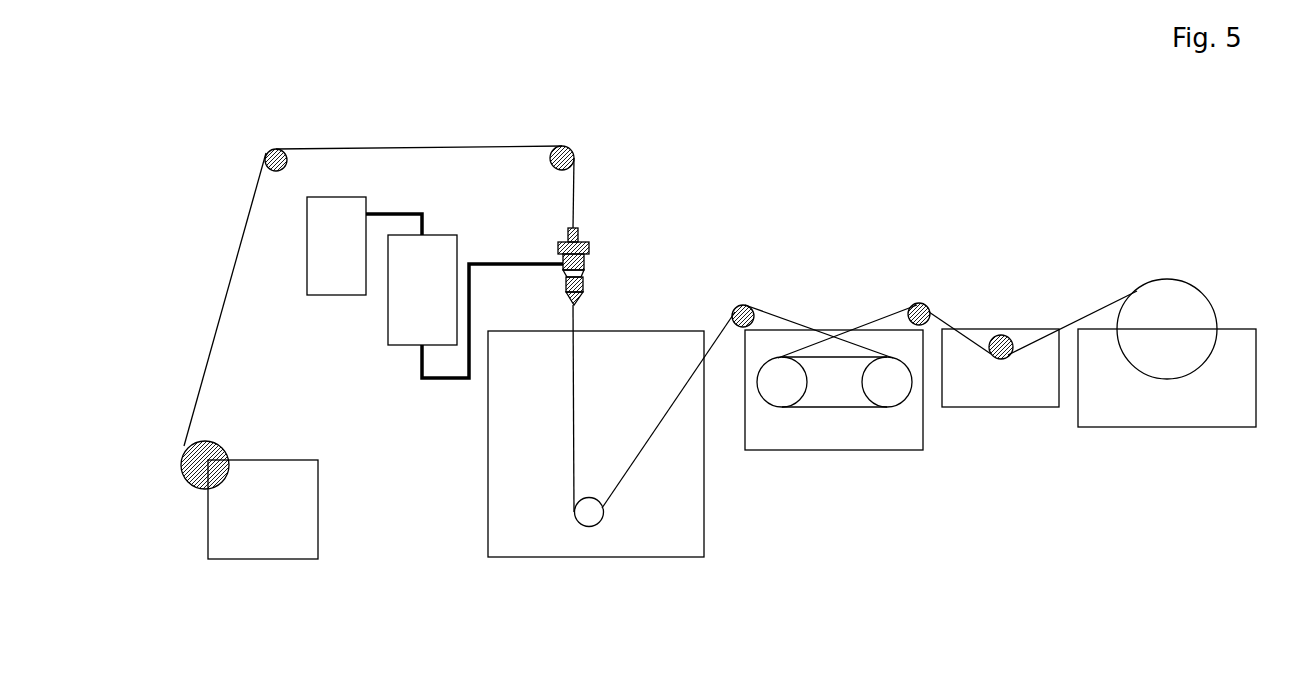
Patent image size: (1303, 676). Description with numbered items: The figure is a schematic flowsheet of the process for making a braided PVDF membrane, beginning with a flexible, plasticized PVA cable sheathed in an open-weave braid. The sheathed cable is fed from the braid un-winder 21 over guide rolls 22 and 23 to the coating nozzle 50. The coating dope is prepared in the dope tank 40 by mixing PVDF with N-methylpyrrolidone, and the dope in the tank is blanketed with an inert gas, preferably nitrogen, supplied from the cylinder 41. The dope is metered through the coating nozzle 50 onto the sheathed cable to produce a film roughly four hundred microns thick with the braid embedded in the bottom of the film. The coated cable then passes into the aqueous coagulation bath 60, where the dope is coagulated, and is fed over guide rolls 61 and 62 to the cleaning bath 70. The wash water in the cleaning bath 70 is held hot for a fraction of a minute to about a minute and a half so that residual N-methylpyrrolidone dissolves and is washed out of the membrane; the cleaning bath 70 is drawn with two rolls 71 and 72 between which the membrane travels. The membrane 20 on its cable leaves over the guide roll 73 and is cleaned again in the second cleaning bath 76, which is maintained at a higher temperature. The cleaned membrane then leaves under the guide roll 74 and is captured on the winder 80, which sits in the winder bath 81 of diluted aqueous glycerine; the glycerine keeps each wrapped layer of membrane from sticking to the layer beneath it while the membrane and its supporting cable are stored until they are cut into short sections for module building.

The membrane 20 is at (886, 315).
The braid un-winder 21 is at (318, 507).
The guide roll 22 is at (271, 148).
The guide roll 23 is at (571, 146).
The dope tank 40 is at (458, 248).
The cylinder 41 is at (333, 296).
The coating nozzle 50 is at (590, 290).
The coagulation bath 60 is at (488, 468).
The guide roll 61 is at (597, 498).
The guide roll 62 is at (742, 305).
The cleaning bath 70 is at (840, 450).
The conveyor roller 71 is at (771, 408).
The conveyor roller 72 is at (900, 408).
The guide roll 73 is at (916, 303).
The guide roll 74 is at (1000, 334).
The second cleaning bath 76 is at (998, 408).
The winder 80 is at (1183, 280).
The winder bath 81 is at (1143, 428).